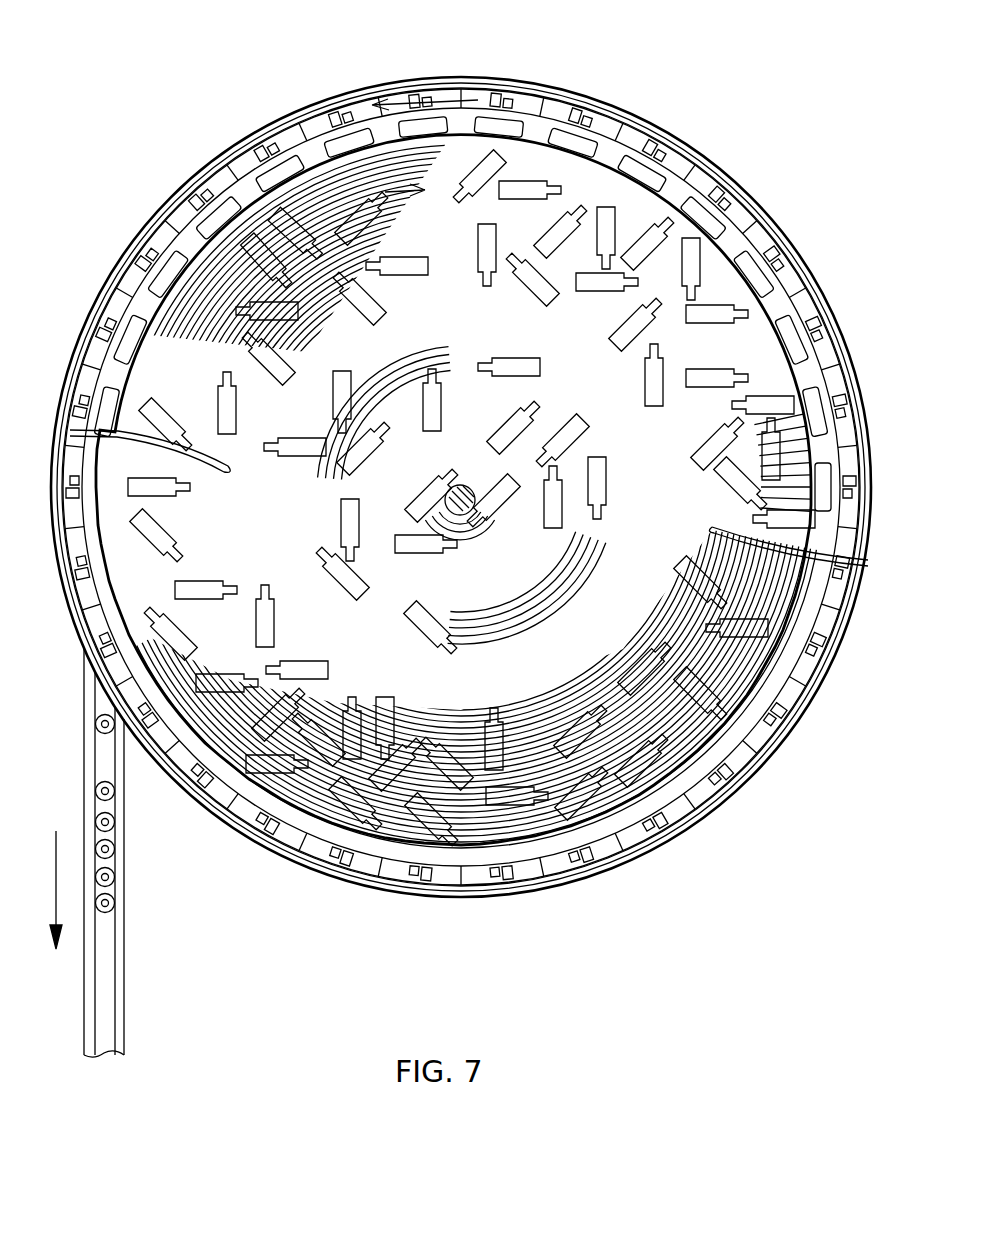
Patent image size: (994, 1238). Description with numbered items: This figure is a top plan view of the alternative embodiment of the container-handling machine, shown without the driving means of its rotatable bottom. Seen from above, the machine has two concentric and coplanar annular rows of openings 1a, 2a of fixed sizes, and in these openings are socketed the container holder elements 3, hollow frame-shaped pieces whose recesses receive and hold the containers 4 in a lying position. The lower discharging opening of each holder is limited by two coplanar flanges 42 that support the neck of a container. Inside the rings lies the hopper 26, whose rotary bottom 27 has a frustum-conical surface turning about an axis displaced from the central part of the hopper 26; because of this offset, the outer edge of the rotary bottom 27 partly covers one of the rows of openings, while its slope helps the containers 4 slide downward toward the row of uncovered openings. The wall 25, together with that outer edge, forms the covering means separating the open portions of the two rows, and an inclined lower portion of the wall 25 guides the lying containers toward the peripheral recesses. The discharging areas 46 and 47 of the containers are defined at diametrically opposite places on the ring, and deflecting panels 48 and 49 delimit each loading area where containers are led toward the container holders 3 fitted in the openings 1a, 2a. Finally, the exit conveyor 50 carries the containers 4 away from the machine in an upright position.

The openings 1a is at (462, 276).
The openings 2a is at (461, 474).
The container holder elements 3 is at (250, 838).
The containers 4 is at (445, 868).
The wall 25 is at (720, 205).
The hopper 26 is at (648, 852).
The rotary bottom 27 is at (432, 183).
The coplanar flanges 42 is at (347, 895).
The discharging area 46 is at (143, 250).
The discharging area 47 is at (833, 686).
The deflecting panel 48 is at (112, 425).
The deflecting panel 49 is at (790, 520).
The exit conveyor 50 is at (107, 977).